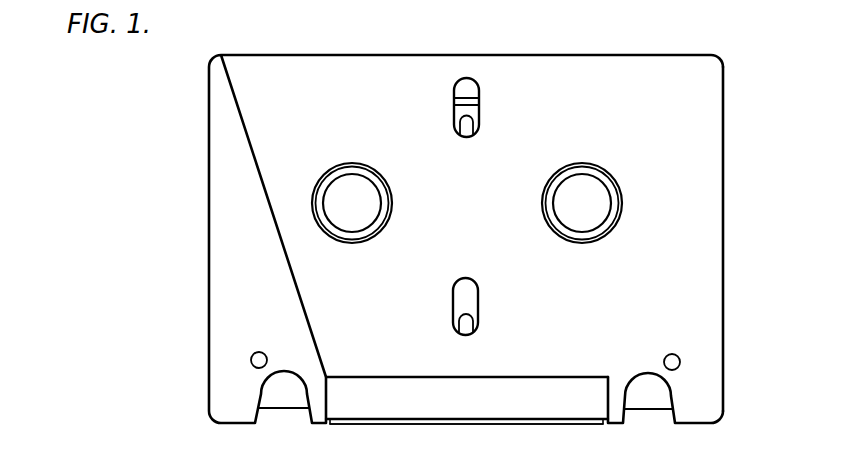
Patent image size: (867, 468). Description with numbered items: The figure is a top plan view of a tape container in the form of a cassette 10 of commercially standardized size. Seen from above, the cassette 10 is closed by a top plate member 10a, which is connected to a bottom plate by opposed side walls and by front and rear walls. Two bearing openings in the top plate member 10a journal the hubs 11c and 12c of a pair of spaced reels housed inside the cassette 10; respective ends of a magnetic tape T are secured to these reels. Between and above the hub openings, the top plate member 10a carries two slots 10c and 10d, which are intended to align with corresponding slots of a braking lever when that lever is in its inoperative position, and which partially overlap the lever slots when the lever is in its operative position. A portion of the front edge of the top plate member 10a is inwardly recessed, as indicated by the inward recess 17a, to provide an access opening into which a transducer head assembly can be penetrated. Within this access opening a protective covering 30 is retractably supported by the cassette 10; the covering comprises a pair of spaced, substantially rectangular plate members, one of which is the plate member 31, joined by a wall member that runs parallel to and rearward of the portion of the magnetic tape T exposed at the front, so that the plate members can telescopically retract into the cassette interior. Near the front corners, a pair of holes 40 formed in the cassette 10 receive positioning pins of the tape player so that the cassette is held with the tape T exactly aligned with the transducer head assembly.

The cassette 10 is at (706, 174).
The top plate member 10a is at (702, 248).
The slot 10c is at (479, 108).
The slot 10d is at (468, 278).
The hub 11c is at (605, 172).
The hub 12c is at (375, 170).
The holes 40 is at (251, 358).
The inward recess 17a is at (462, 379).
The protective covering 30 is at (545, 397).
The plate member 31 is at (393, 400).
The magnetic tape T is at (647, 410).